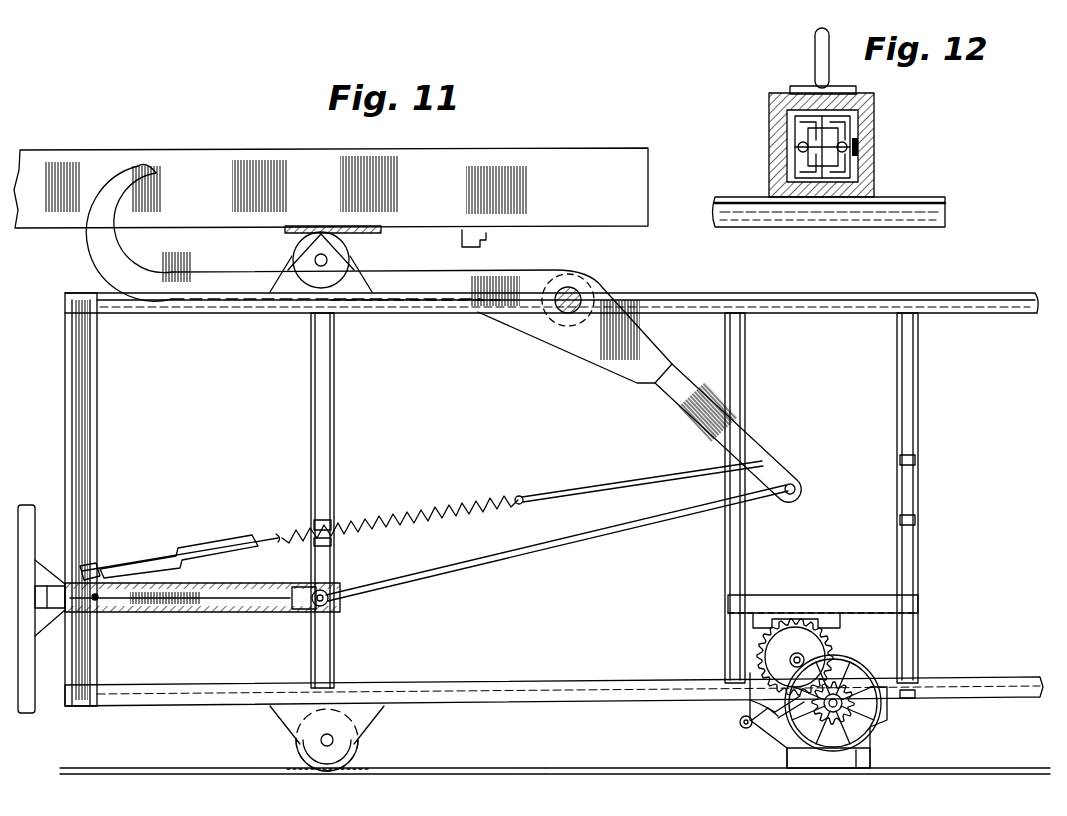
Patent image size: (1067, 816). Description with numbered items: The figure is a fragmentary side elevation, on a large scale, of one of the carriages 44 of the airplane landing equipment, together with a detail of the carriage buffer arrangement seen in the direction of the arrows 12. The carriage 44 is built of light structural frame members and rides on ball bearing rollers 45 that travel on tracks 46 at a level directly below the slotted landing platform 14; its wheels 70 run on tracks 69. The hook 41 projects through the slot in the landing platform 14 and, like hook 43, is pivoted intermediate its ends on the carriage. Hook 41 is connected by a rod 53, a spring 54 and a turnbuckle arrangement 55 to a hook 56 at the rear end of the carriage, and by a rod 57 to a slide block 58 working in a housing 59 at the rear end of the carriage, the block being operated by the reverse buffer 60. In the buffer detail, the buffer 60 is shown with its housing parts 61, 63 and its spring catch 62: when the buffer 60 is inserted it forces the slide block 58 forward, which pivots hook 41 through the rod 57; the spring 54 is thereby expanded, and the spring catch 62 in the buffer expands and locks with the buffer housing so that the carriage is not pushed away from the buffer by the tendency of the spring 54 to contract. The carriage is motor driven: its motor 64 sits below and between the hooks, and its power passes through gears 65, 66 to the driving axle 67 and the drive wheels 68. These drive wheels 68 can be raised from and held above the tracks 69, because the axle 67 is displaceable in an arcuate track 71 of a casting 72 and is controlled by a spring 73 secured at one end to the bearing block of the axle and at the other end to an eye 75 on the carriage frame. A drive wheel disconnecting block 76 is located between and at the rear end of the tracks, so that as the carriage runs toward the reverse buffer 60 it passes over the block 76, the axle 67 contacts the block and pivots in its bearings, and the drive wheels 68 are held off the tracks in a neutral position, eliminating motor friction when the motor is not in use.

In FIG. 11, the landing platform 14 is at (550, 152).
In FIG. 11, the hook 41 is at (118, 256).
In FIG. 11, the hook 43 is at (590, 290).
In FIG. 11, the carriage 44 is at (645, 300).
In FIG. 11, the ball bearing roller 45 is at (352, 253).
In FIG. 11, the track 46 is at (489, 244).
In FIG. 11, the elevator shaft 12 is at (100, 537).
In FIG. 11, the rod 53 is at (575, 508).
In FIG. 11, the spring 54 is at (432, 512).
In FIG. 11, the turnbuckle arrangement 55 is at (224, 552).
In FIG. 11, the hook 56 is at (88, 568).
In FIG. 11, the rod 57 is at (595, 548).
In FIG. 11, the slide block 58 is at (305, 612).
In FIG. 11, the housing 59 is at (232, 613).
In FIG. 12, the housing 59 is at (877, 140).
In FIG. 11, the reverse buffer 60 is at (42, 572).
In FIG. 12, the base rail 61 is at (783, 170).
In FIG. 12, the spring catch 62 is at (876, 152).
In FIG. 12, the valve housing 63 is at (875, 110).
In FIG. 11, the motor 64 is at (838, 639).
In FIG. 11, the gear 65 is at (760, 648).
In FIG. 11, the gear 66 is at (840, 667).
In FIG. 11, the driving axle 67 is at (850, 693).
In FIG. 11, the wheel 68 is at (868, 733).
In FIG. 11, the track 69 is at (548, 767).
In FIG. 11, the wheel 70 is at (354, 748).
In FIG. 11, the arcuate track 71 is at (783, 728).
In FIG. 11, the casting 72 is at (757, 703).
In FIG. 11, the spring 73 is at (763, 723).
In FIG. 11, the eye 75 is at (748, 712).
In FIG. 11, the drive wheel disconnecting block 76 is at (853, 760).